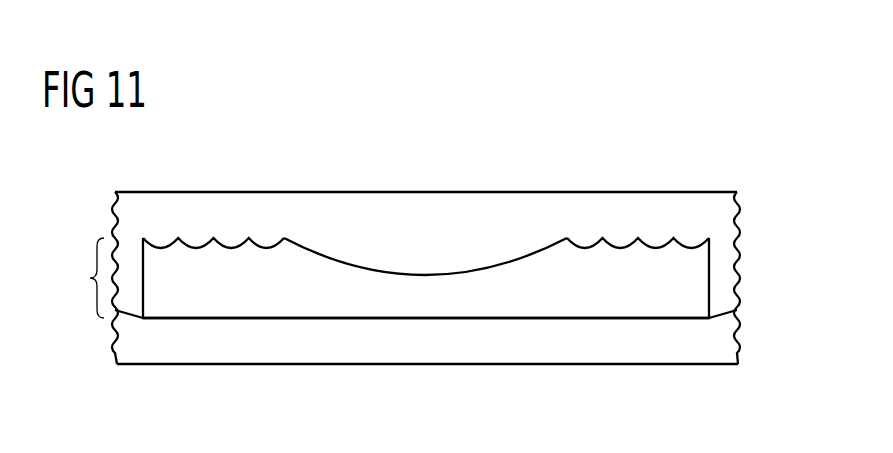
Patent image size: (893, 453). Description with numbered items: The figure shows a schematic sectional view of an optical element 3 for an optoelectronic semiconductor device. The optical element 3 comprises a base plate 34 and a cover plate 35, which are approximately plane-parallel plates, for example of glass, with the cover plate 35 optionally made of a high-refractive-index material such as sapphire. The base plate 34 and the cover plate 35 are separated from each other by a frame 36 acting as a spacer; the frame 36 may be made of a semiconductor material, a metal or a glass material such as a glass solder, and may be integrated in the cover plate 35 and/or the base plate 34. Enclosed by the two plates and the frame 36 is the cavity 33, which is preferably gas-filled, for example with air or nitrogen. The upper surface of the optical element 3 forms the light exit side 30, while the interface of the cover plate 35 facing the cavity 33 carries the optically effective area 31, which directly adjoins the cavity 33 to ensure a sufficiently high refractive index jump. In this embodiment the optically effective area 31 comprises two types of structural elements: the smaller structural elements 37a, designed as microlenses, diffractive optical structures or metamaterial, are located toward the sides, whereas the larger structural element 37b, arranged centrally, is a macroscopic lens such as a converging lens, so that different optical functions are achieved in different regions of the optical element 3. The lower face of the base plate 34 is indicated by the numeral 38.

The optical element 3 is at (720, 166).
The light exit side 30 is at (423, 190).
The cover plate 35 is at (544, 203).
The optically effective area 31 is at (617, 240).
The cavity 33 is at (239, 305).
The base plate 34 is at (505, 353).
The frame 36 is at (81, 278).
The smaller structural elements 37a is at (586, 250).
The larger structural element 37b is at (338, 262).
The bottom surface 38 is at (400, 364).